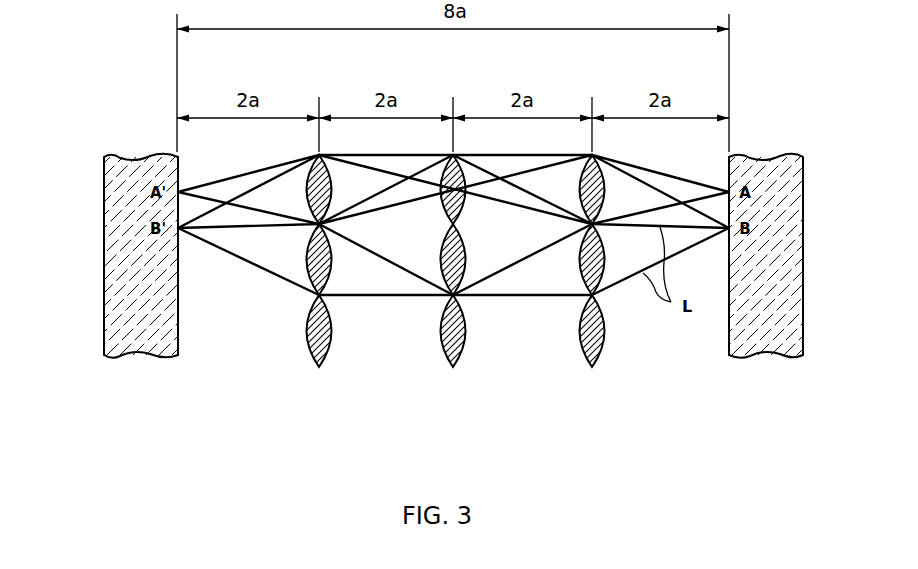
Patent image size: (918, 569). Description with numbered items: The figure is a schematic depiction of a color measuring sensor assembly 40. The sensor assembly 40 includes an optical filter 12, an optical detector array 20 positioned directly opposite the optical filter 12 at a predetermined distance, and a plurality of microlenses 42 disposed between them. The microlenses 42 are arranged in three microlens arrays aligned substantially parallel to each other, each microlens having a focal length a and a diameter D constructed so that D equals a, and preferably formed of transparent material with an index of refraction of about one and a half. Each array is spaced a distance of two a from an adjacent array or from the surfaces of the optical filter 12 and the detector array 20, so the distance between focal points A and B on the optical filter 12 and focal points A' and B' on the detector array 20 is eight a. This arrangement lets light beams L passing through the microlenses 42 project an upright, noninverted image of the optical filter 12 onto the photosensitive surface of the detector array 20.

The optical filter 12 is at (803, 197).
The optical detector array 20 is at (104, 198).
The color measuring sensor assembly 40 is at (252, 400).
The microlenses 42 is at (332, 355).